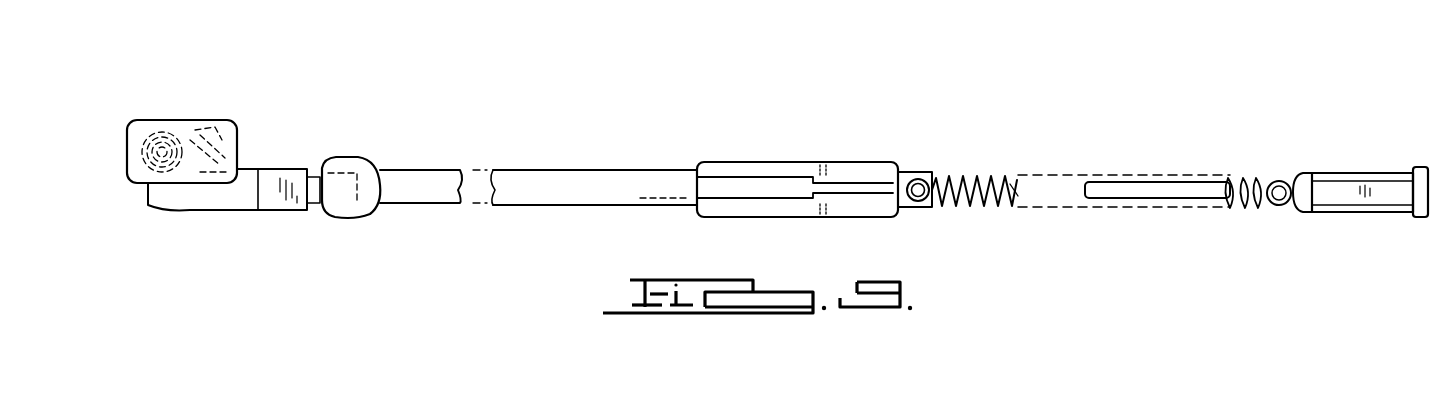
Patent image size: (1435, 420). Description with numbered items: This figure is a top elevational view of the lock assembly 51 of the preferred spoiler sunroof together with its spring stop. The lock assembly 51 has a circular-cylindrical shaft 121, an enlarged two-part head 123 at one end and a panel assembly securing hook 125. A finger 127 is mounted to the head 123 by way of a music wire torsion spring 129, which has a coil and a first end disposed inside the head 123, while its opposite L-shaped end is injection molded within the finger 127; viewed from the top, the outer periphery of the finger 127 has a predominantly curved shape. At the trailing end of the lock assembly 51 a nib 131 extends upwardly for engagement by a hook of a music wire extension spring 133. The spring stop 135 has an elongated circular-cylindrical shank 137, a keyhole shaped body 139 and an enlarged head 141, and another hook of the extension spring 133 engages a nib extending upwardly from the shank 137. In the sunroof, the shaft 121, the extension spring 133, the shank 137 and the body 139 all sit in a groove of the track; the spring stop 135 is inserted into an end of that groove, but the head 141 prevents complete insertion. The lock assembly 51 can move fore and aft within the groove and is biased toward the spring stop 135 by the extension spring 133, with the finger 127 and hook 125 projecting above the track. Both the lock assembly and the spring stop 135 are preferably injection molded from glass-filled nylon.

The implant insertion tool assembly 51 is at (1272, 93).
The circular-cylindrical shaft 121 is at (572, 177).
The enlarged two-part head 123 is at (133, 127).
The panel assembly securing hook 125 is at (748, 167).
The finger 127 is at (355, 158).
The torsion spring 129 is at (268, 170).
The nib 131 is at (917, 183).
The extension spring 133 is at (1002, 176).
The spring stop 135 is at (1337, 185).
The elongated circular-cylindrical shank 137 is at (1157, 190).
The keyhole shaped body 139 is at (1322, 212).
The enlarged head 141 is at (1408, 223).